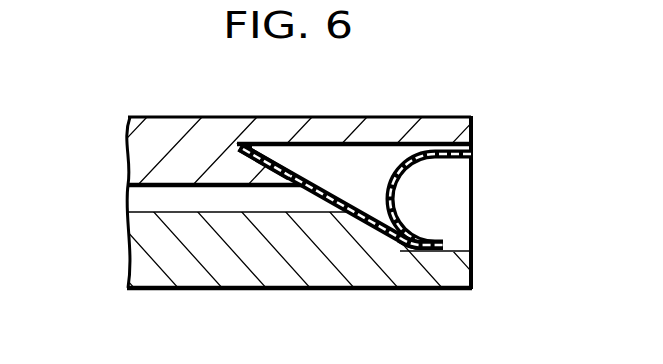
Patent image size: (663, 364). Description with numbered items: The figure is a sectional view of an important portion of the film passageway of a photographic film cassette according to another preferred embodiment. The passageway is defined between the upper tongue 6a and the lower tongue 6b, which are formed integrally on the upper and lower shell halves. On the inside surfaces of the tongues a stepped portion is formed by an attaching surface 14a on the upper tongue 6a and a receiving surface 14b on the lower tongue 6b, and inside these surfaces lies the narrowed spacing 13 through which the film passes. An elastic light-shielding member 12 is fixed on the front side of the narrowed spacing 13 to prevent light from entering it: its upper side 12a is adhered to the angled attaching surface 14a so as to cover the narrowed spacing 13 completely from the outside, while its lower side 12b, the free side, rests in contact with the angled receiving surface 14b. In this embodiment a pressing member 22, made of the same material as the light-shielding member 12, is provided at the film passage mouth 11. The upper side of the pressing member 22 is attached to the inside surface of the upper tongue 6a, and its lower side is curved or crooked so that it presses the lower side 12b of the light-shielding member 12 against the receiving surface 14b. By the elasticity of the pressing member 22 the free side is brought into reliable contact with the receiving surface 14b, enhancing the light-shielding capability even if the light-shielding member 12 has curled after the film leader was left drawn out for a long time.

The upper tongue 6a is at (146, 117).
The lower tongue 6b is at (323, 290).
The film passage mouth 11 is at (472, 172).
The light-shielding member 12 is at (352, 160).
The upper side of the light-shielding member 12a is at (289, 143).
The lower side of the light-shielding member 12b is at (398, 218).
The narrowed spacing 13 is at (182, 200).
The attaching surface 14a is at (248, 149).
The receiving surface 14b is at (382, 246).
The pressing member 22 is at (393, 188).